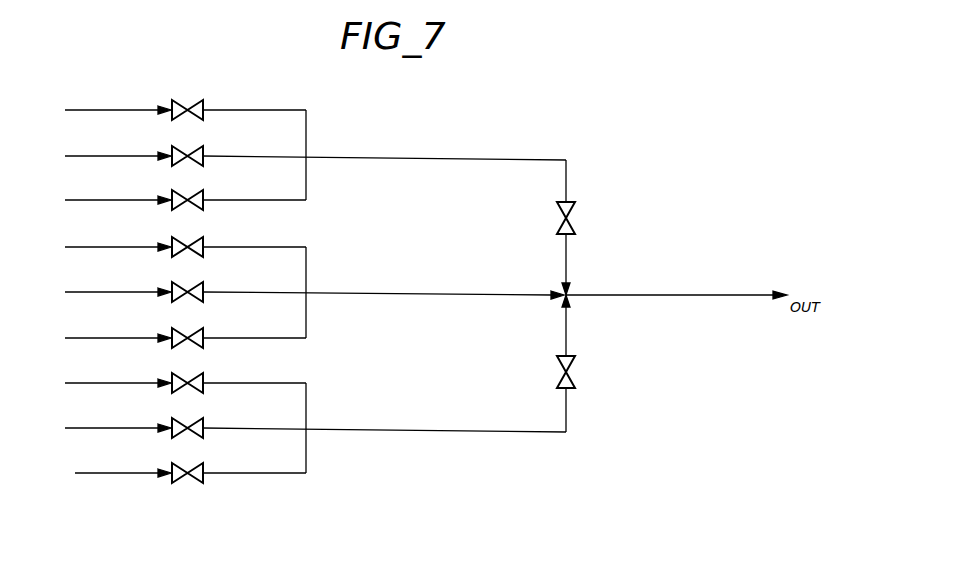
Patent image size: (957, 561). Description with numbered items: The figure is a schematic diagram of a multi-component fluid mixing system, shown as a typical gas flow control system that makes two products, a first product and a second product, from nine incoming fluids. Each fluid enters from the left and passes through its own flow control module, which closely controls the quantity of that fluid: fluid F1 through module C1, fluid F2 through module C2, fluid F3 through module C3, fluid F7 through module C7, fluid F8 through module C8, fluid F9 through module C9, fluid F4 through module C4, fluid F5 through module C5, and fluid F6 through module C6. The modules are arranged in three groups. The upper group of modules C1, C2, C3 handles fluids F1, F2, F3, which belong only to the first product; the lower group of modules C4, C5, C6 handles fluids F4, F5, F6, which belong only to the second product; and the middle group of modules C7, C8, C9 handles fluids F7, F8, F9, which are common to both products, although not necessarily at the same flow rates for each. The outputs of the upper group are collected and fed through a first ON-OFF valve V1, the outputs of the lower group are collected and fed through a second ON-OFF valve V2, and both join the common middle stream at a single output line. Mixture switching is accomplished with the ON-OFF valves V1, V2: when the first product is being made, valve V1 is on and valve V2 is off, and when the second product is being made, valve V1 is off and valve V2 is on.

The flow control module C1 is at (239, 104).
The flow control module C2 is at (369, 150).
The flow control module C3 is at (239, 194).
The flow control module C4 is at (239, 377).
The flow control module C5 is at (369, 422).
The flow control module C6 is at (239, 467).
The flow control module C7 is at (239, 241).
The flow control module C8 is at (368, 286).
The flow control module C9 is at (239, 332).
The ON-OFF valve V1 is at (596, 227).
The ON-OFF valve V2 is at (598, 363).
The fluid F1 is at (107, 110).
The fluid F2 is at (107, 156).
The fluid F3 is at (107, 200).
The fluid F4 is at (107, 383).
The fluid F5 is at (107, 428).
The fluid F6 is at (107, 473).
The fluid F7 is at (107, 247).
The fluid F8 is at (107, 292).
The fluid F9 is at (107, 338).